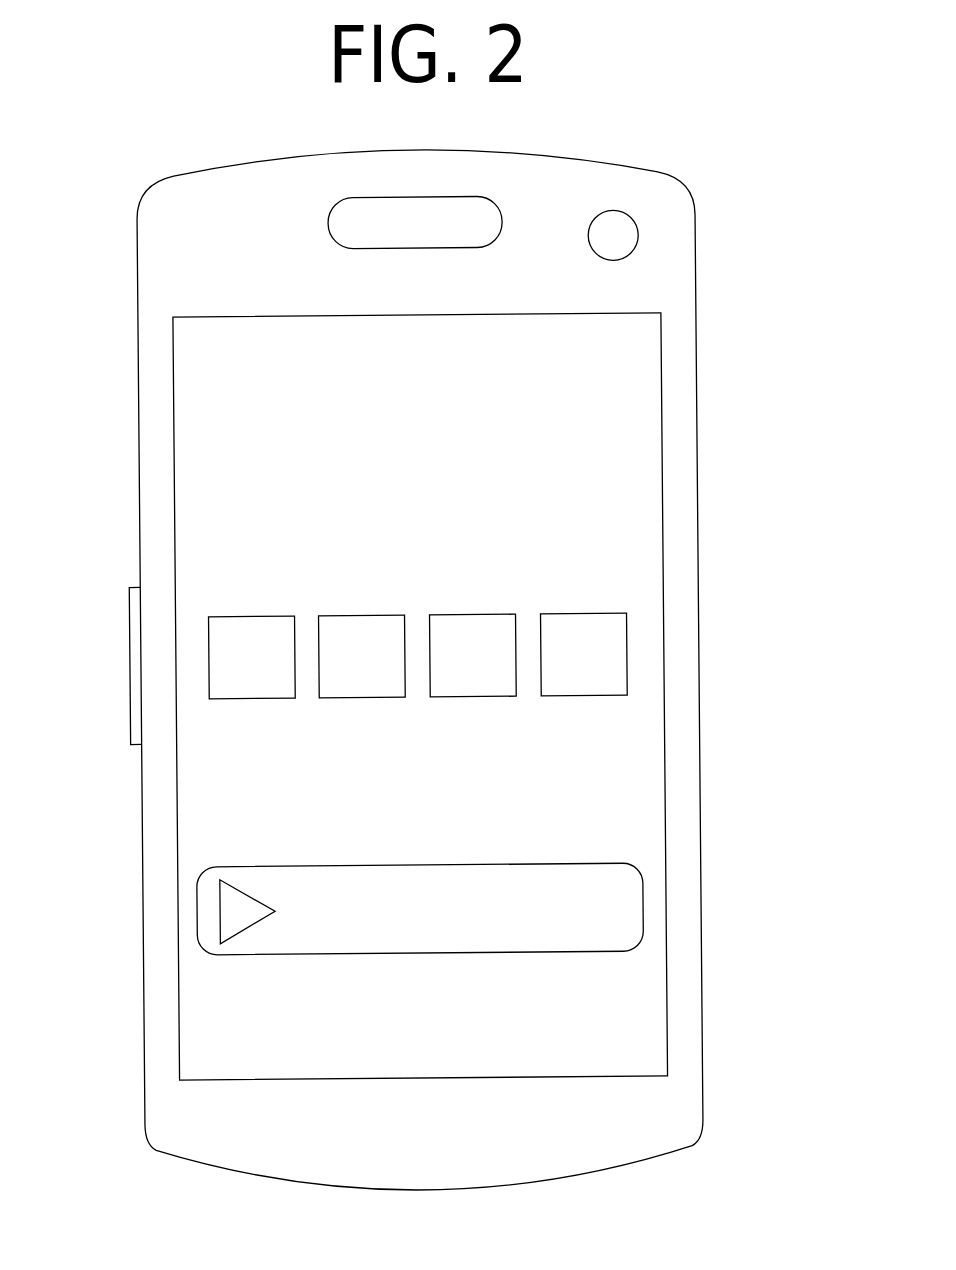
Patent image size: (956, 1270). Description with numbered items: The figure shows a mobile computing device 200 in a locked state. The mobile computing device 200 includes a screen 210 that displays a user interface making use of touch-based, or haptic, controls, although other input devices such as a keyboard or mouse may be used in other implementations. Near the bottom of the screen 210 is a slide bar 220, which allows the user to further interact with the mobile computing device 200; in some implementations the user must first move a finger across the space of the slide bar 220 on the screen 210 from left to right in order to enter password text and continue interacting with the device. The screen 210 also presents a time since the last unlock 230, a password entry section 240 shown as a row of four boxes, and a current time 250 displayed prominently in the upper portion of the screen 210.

The mobile computing device 200 is at (134, 177).
The screen 210 is at (176, 406).
The slide bar 220 is at (642, 907).
The time since the last unlock 230 is at (520, 795).
The password entry section 240 is at (628, 648).
The current time 250 is at (577, 422).